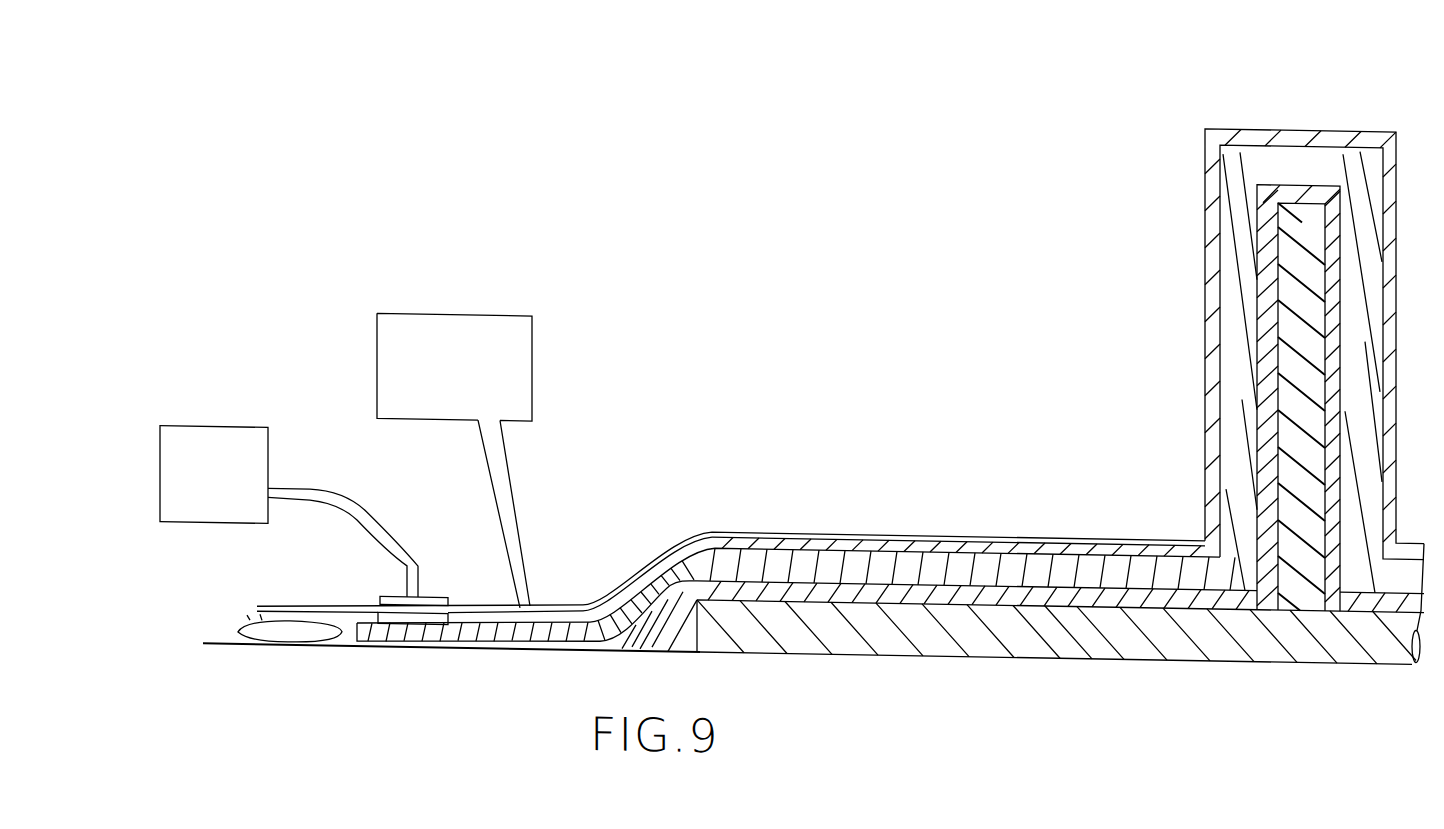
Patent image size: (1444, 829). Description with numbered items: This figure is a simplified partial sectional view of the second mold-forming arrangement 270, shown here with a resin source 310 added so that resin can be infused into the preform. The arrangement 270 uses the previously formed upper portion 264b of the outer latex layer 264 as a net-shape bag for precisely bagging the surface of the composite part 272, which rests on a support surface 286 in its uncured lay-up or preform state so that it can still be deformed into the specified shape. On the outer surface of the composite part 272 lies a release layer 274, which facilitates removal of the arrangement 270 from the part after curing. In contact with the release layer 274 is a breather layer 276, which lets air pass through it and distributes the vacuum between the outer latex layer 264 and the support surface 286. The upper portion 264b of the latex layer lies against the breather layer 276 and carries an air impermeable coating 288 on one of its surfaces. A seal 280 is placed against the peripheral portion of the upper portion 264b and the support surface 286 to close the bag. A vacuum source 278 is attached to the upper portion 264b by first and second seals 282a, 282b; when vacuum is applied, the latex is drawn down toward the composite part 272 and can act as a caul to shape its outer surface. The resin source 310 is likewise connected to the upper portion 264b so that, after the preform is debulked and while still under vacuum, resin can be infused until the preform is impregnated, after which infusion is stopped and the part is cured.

The outer latex layer 264 is at (1204, 241).
The upper portion of the outer latex layer 264b is at (787, 529).
The second mold-forming arrangement 270 is at (650, 451).
The composite part 272 is at (975, 652).
The release layer 274 is at (1105, 590).
The breather layer 276 is at (930, 549).
The vacuum source 278 is at (195, 515).
The seal 280 is at (263, 641).
The first seal 282a is at (442, 597).
The second seal 282b is at (437, 632).
The support surface 286 is at (225, 654).
The air impermeable coating 288 is at (882, 533).
The resin source 310 is at (450, 322).